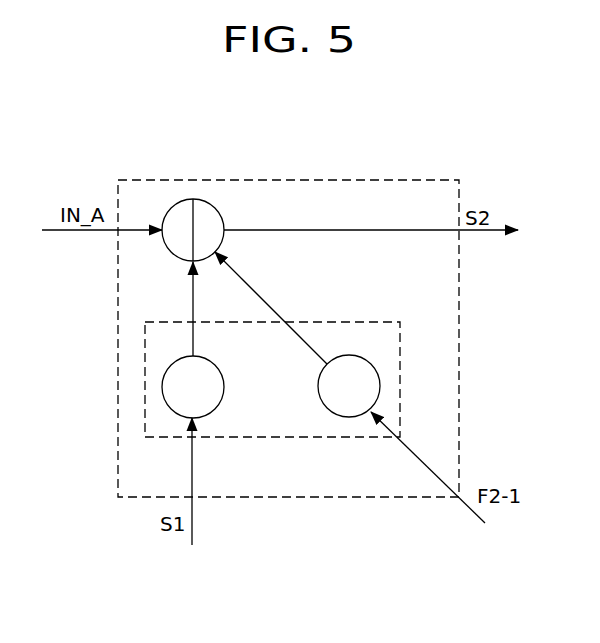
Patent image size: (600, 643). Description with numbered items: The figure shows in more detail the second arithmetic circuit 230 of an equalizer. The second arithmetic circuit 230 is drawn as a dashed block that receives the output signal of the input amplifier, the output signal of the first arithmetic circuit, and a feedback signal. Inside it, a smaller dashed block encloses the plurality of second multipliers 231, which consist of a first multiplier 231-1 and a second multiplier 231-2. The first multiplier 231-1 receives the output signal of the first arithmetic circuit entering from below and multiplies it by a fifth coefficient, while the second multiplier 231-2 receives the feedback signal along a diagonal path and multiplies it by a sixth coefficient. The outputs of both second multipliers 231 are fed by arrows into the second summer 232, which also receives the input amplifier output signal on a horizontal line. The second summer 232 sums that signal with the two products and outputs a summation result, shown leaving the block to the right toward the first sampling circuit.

The second arithmetic circuit 230 is at (287, 180).
The second multipliers 231 is at (332, 322).
The second summer 232 is at (170, 256).
The 2-1 multiplier 231-1 is at (162, 372).
The 2-2 multiplier 231-2 is at (335, 417).